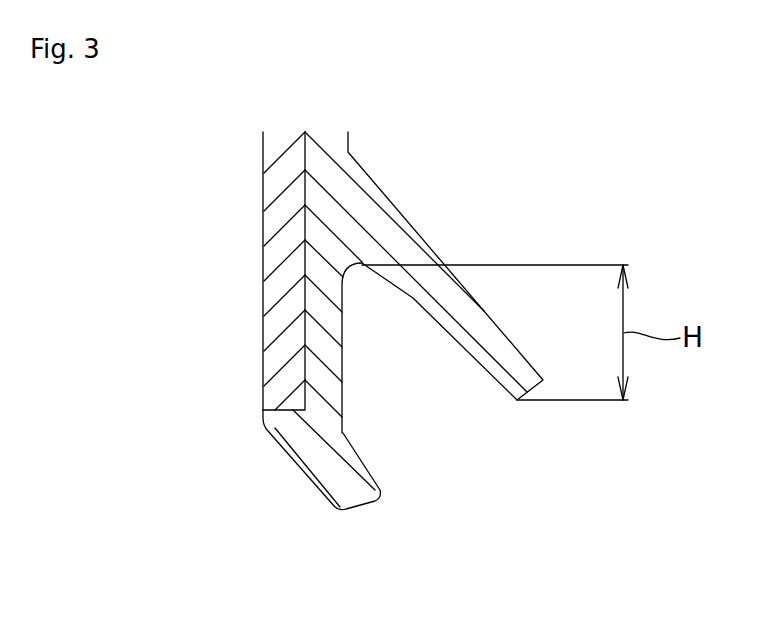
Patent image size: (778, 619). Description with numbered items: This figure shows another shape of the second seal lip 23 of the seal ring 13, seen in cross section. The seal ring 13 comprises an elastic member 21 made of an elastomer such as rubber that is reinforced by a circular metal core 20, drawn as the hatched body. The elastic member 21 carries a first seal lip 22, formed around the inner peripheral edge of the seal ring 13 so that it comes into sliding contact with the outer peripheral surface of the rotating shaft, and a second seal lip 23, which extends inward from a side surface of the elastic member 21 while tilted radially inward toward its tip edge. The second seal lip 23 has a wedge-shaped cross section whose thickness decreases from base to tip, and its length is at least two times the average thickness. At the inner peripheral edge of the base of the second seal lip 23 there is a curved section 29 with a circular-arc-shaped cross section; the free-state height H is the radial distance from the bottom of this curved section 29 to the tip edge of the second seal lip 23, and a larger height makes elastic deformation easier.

The seal ring 13 is at (408, 179).
The metal core 20 is at (272, 225).
The elastic member 21 is at (328, 168).
The first seal lip 22 is at (350, 485).
The second seal lip 23 is at (473, 327).
The curved section 29 is at (358, 267).